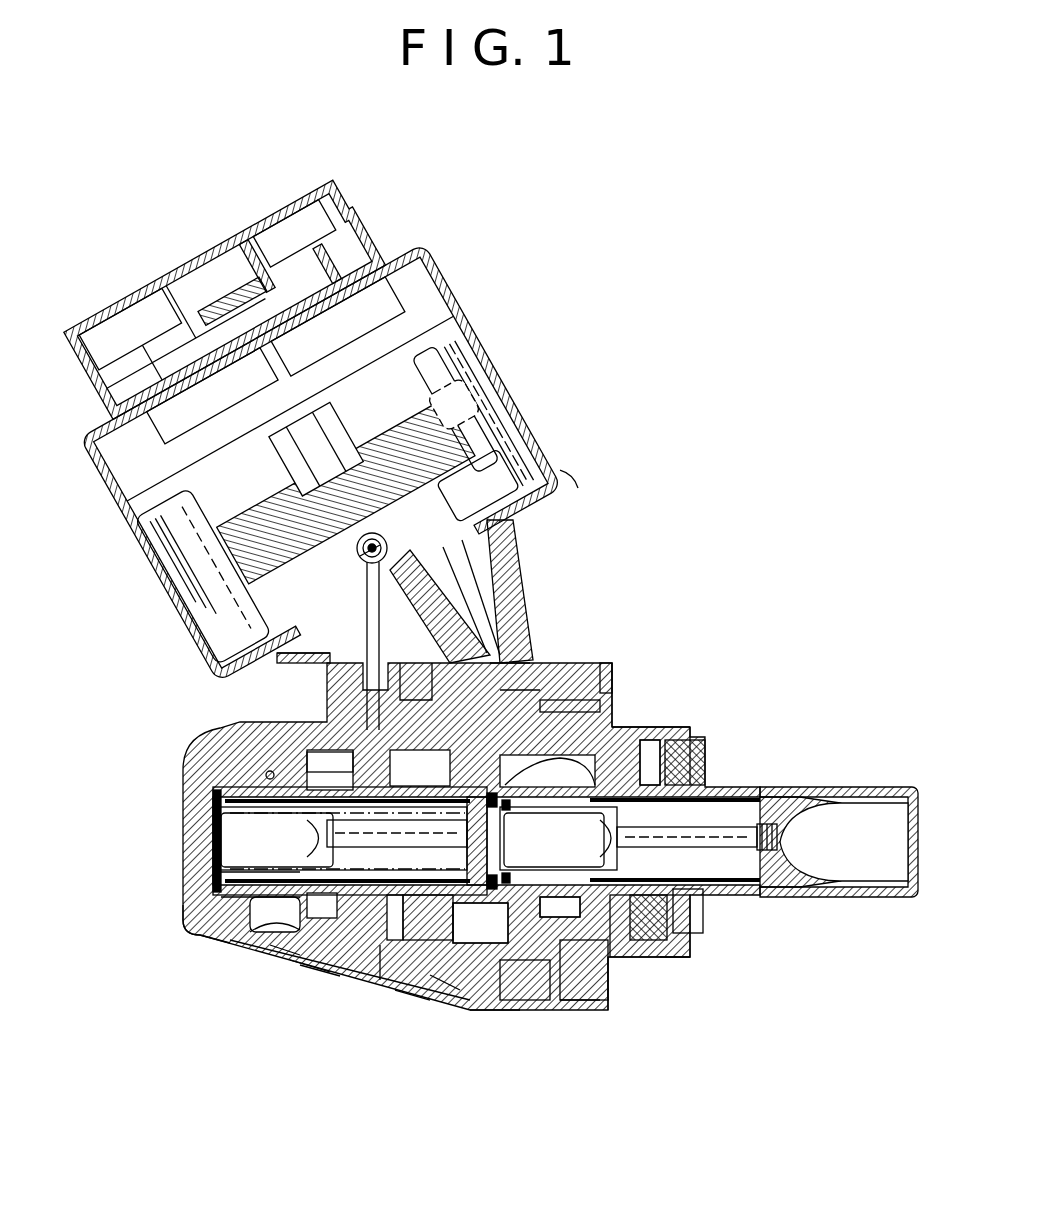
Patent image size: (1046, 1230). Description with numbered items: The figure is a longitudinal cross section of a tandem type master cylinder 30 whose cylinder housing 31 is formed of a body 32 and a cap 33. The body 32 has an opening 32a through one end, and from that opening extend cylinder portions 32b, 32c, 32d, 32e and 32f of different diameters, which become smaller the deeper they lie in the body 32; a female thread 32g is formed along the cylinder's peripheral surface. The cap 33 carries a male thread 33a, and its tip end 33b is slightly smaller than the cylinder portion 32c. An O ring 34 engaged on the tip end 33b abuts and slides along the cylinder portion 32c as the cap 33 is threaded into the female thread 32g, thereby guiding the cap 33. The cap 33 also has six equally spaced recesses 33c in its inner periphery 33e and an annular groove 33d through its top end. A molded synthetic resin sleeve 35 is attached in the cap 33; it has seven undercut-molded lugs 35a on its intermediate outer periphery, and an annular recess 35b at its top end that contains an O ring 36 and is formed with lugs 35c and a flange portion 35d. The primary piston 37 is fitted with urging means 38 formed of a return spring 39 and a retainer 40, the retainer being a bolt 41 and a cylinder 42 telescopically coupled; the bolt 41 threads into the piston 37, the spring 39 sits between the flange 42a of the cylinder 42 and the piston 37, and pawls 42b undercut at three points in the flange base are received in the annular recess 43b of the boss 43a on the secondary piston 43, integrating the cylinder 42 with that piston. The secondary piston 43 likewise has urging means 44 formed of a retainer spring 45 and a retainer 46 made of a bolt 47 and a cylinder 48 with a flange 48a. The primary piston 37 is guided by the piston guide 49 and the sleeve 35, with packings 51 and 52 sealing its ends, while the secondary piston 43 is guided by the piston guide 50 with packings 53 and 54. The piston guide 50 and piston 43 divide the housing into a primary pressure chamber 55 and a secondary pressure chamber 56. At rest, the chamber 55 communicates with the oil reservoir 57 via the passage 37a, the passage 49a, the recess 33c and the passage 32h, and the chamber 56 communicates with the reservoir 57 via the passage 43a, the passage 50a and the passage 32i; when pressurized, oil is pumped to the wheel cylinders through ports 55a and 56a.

The master cylinder 30 is at (545, 430).
The oil reservoir 57 is at (572, 470).
The cylinder housing 31 is at (638, 668).
The body 32 is at (200, 790).
The opening 32a is at (645, 700).
The cylinder portion 32b is at (552, 897).
The cylinder portion 32c is at (492, 1010).
The cylinder portion 32d is at (400, 1000).
The cylinder portion 32e is at (300, 965).
The cylinder portion 32f is at (190, 918).
The female thread 32g is at (622, 968).
The passage 32h is at (500, 640).
The passage 32i is at (330, 735).
The cap 33 is at (665, 948).
The male thread 33a is at (580, 1010).
The tip end 33b is at (512, 660).
The recesses 33c is at (648, 722).
The annular groove 33d is at (440, 990).
The inner periphery 33e is at (668, 978).
The O ring 34 is at (520, 690).
The sleeve 35 is at (600, 1005).
The lugs 35a is at (520, 985).
The annular recess 35b is at (458, 600).
The lug 35c is at (415, 665).
The flange portion 35d is at (497, 612).
The O ring 36 is at (470, 752).
The primary piston 37 is at (850, 793).
The passage 37a is at (698, 770).
The urging means 38 is at (790, 880).
The return spring 39 is at (790, 793).
The retainer 40 is at (730, 825).
The bolt 41 is at (690, 830).
The cylinder 42 is at (580, 870).
The flange 42a is at (415, 898).
The pawl 42b is at (532, 800).
The secondary piston 43 is at (232, 940).
The boss 43a is at (330, 755).
The annular recess 43b is at (493, 895).
The urging means 44 is at (200, 925).
The retainer spring 45 is at (220, 905).
The retainer 46 is at (422, 752).
The bolt 47 is at (312, 838).
The cylinder 48 is at (232, 826).
The flange 48a is at (220, 872).
The piston guide 49 is at (692, 930).
The passage 49a is at (690, 735).
The piston guide 50 is at (290, 960).
The passage 50a is at (368, 640).
The packing 51 is at (703, 918).
The packing 52 is at (632, 745).
The packing 53 is at (380, 960).
The packing 54 is at (270, 945).
The primary pressure chamber 55 is at (562, 702).
The port 55a is at (380, 560).
The secondary pressure chamber 56 is at (218, 830).
The port 56a is at (266, 774).